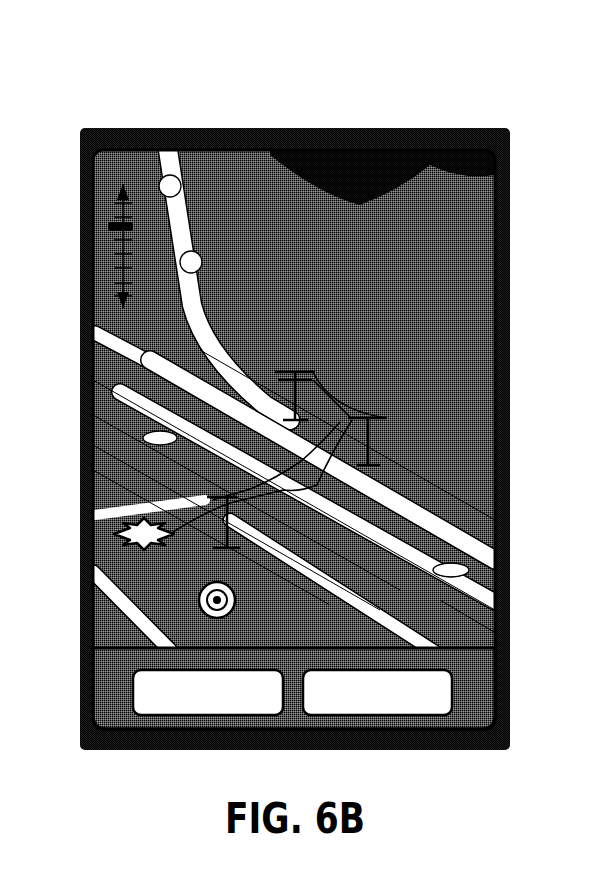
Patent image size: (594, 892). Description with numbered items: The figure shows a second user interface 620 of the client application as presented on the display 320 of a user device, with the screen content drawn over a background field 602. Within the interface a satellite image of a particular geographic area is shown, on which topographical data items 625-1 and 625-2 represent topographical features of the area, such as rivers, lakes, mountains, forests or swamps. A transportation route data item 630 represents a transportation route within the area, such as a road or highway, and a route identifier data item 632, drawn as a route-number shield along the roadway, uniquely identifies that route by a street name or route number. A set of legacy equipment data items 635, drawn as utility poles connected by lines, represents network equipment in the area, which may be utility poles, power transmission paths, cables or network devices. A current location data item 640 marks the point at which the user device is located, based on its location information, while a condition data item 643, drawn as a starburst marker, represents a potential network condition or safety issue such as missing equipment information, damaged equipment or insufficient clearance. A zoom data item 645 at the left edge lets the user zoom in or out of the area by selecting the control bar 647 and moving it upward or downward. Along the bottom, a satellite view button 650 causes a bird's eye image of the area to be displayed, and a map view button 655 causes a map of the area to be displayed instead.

The second user interface 620 is at (118, 75).
The background field 602 is at (0, 628).
The topographical data item 625-1 is at (440, 256).
The topographical data item 625-2 is at (428, 165).
The zoom data item 645 is at (96, 187).
The control bar 647 is at (109, 226).
The legacy equipment data item 635 is at (333, 390).
The condition data item 643 is at (149, 518).
The display 320 is at (116, 538).
The current location data item 640 is at (236, 603).
The route identifier data item 632 is at (472, 573).
The transportation route data item 630 is at (472, 620).
The satellite view button 650 is at (149, 711).
The map view button 655 is at (438, 711).